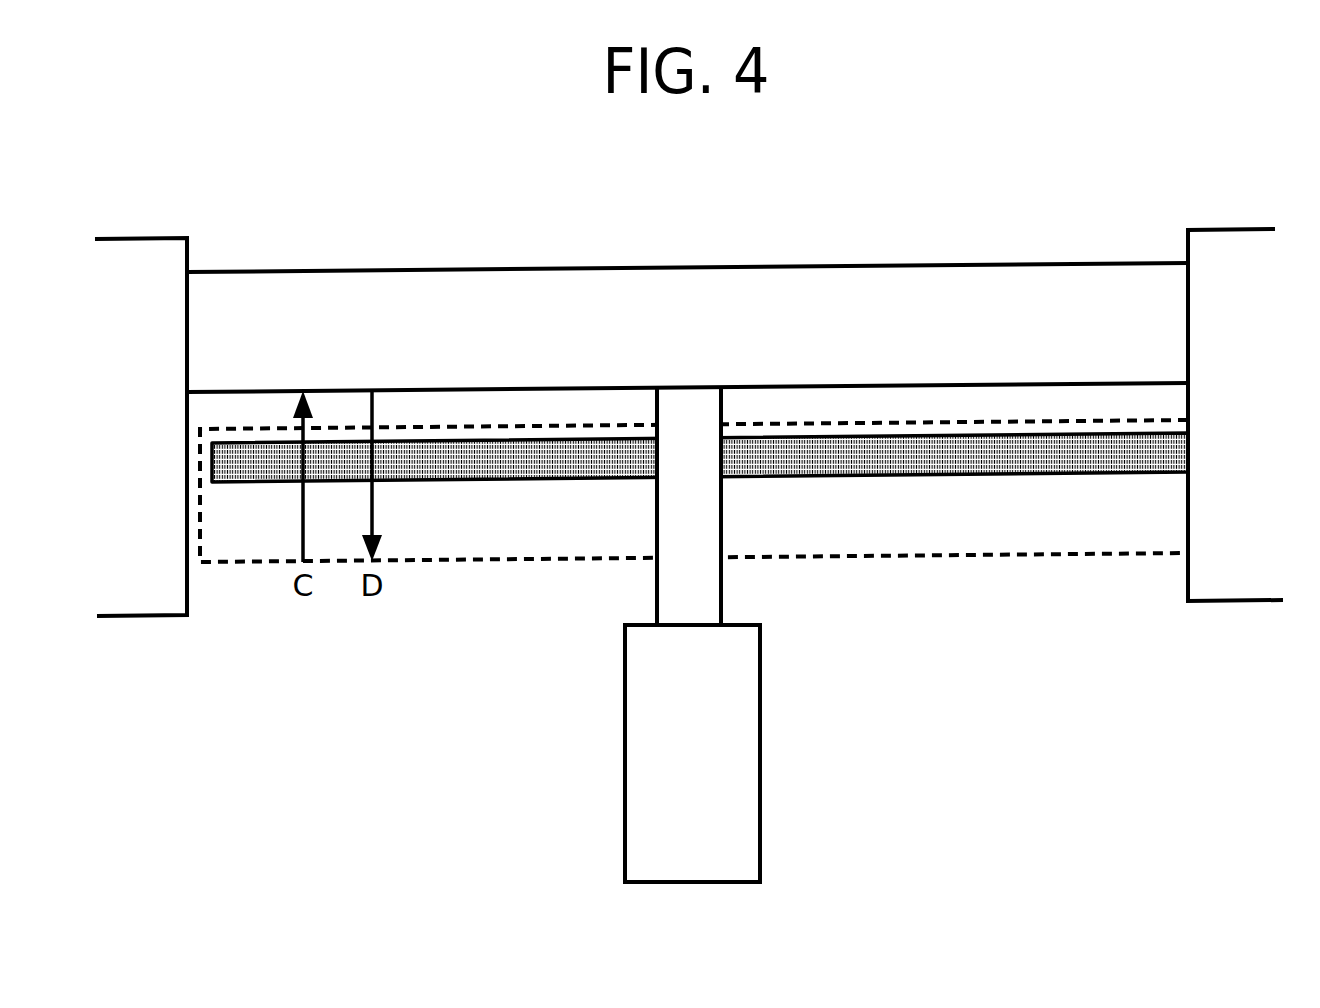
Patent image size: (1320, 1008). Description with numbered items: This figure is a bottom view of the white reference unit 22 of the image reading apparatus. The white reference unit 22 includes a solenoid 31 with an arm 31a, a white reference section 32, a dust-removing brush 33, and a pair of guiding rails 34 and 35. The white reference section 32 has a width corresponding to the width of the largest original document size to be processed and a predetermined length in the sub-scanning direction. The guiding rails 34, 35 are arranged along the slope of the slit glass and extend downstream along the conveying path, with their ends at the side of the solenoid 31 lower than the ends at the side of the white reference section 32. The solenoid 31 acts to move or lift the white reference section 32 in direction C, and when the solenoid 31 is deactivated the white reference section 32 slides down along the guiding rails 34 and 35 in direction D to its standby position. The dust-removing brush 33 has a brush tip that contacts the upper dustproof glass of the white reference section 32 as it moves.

The white reference unit 22 is at (1064, 157).
The solenoid 31 is at (761, 800).
The arm 31a is at (722, 588).
The white reference section 32 is at (748, 242).
The dust-removing brush 33 is at (470, 483).
The guiding rail 34 is at (145, 238).
The guiding rail 35 is at (1232, 229).